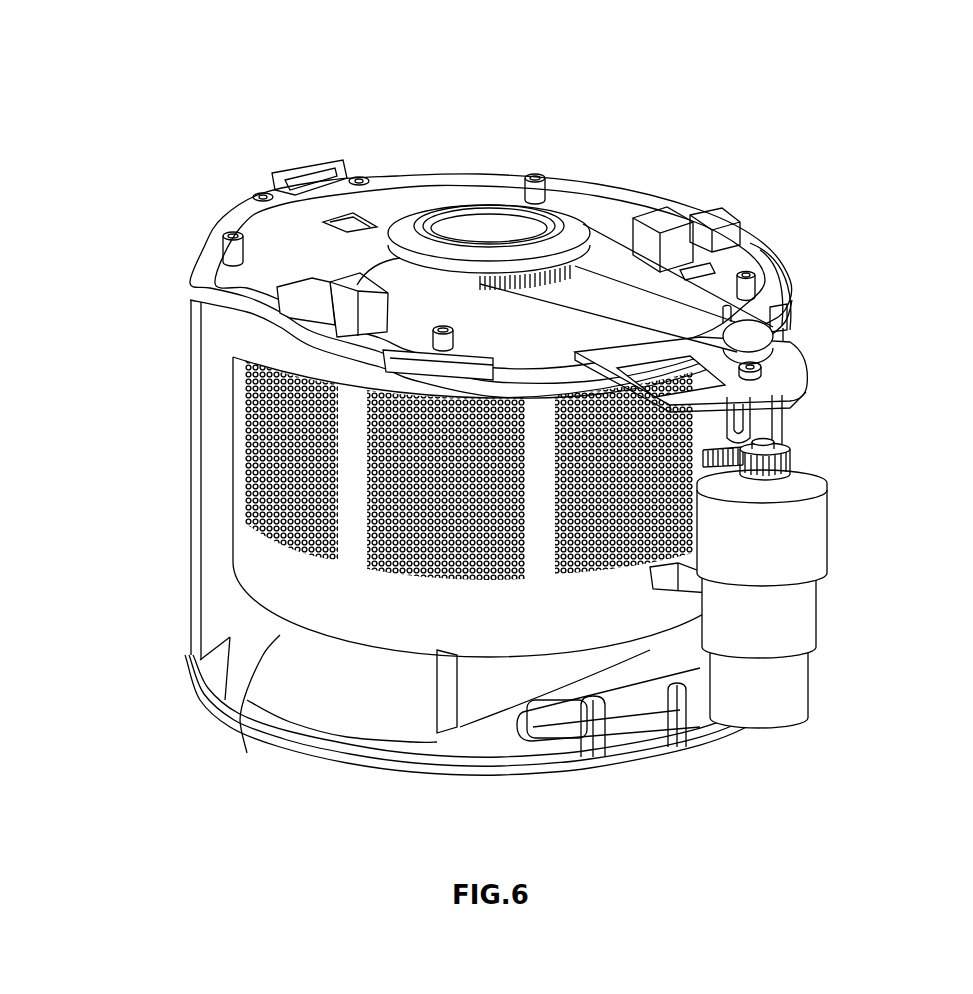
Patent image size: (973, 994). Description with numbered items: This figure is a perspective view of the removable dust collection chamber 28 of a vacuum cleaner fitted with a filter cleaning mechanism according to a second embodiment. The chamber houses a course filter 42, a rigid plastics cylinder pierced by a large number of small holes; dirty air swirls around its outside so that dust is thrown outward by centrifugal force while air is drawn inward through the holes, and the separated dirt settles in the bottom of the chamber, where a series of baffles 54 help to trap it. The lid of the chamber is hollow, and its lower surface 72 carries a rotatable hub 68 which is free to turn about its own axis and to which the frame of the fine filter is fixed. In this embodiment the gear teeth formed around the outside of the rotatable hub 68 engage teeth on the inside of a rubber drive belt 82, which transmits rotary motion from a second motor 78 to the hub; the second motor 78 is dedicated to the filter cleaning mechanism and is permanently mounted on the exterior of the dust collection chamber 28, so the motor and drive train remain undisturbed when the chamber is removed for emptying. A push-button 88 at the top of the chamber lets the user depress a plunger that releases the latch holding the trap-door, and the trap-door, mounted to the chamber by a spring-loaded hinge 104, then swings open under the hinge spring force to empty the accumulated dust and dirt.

The dust collection chamber 28 is at (195, 570).
The course filter 42 is at (253, 470).
The baffles 54 is at (430, 704).
The rotatable hub 68 is at (403, 227).
The lower surface of the lid 72 is at (280, 280).
The second motor 78 is at (775, 620).
The rubber drive belt 82 is at (733, 343).
The push-button 88 is at (307, 167).
The spring-loaded hinge 104 is at (633, 737).